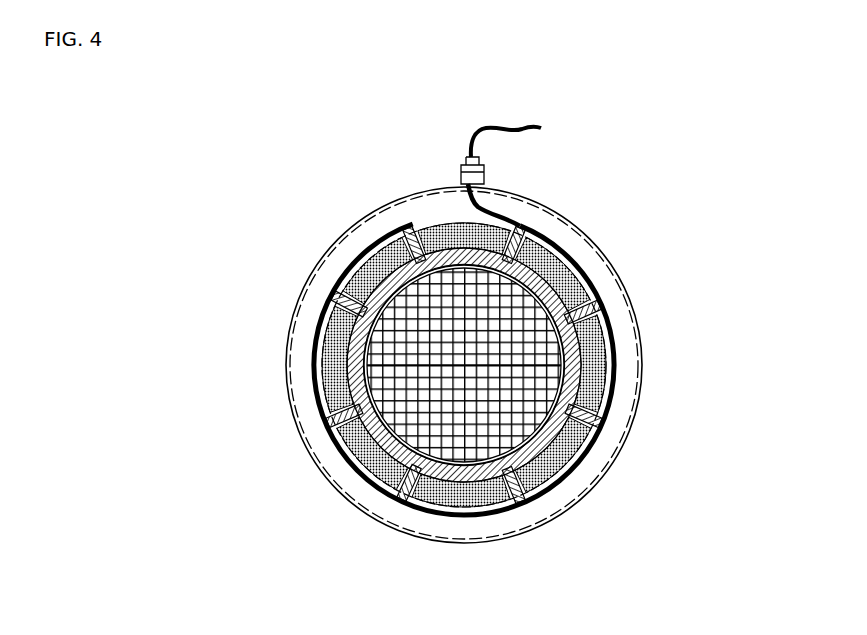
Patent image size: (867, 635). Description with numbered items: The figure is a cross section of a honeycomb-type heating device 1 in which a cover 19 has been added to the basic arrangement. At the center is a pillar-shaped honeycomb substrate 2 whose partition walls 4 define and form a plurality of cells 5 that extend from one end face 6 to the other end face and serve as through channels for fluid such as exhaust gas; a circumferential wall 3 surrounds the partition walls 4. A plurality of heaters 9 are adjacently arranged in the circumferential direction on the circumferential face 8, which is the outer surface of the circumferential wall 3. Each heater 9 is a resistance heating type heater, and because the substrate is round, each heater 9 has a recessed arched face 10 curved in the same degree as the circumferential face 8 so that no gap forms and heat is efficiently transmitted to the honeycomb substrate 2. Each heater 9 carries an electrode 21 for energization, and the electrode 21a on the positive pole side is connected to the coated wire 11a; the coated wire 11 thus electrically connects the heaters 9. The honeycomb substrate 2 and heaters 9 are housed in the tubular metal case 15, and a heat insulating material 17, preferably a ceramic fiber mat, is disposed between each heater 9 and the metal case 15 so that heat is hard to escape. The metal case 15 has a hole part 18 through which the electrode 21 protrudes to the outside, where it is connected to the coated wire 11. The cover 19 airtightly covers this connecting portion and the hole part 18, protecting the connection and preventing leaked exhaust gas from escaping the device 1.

The honeycomb-type heating device 1 is at (664, 87).
The honeycomb substrate 2 is at (438, 402).
The circumferential wall 3 is at (565, 460).
The partition walls 4 is at (578, 393).
The cells 5 is at (540, 372).
The one end face 6 is at (403, 362).
The circumferential face 8 is at (466, 466).
The heaters 9 is at (410, 226).
The recessed arched face 10 is at (362, 357).
The coated wire 11 is at (535, 193).
The coated wire 11a is at (498, 213).
The metal case 15 is at (458, 223).
The heat insulating material 17 is at (375, 262).
The hole part 18 is at (390, 500).
The cover 19 is at (430, 226).
The electrode 21 is at (474, 401).
The electrode 21a is at (378, 245).